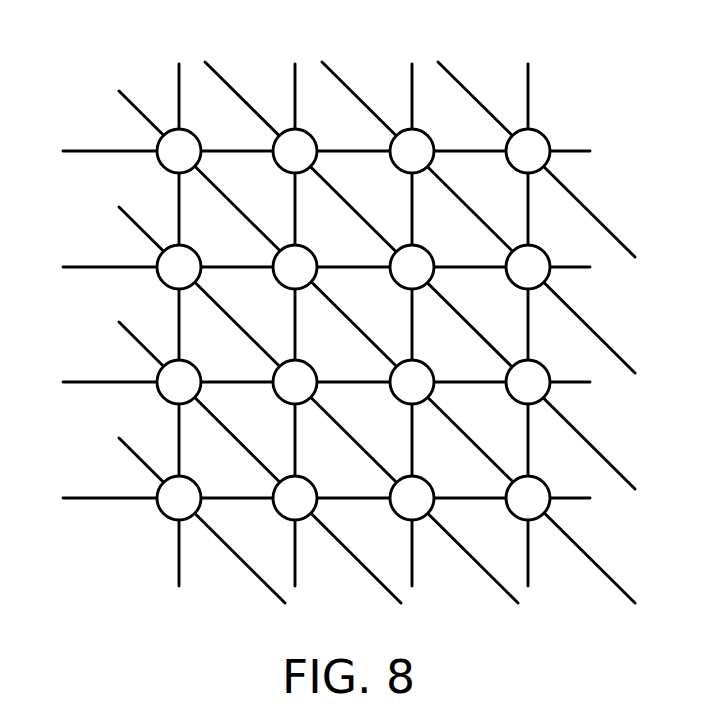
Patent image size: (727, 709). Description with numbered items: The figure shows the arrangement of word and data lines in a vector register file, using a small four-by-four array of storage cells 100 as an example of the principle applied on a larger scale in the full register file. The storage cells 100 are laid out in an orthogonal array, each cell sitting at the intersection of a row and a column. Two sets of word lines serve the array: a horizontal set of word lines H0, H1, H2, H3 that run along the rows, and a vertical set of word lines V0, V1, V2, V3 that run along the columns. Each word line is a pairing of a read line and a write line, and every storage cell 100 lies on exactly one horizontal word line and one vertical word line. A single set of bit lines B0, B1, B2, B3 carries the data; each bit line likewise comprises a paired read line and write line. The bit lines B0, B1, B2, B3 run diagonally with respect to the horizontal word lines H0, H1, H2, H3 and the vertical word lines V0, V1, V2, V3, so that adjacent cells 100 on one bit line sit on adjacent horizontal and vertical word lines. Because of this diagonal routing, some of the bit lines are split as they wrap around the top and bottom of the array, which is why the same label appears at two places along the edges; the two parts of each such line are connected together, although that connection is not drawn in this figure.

The storage cell 100 is at (283, 131).
The horizontal word line H0 is at (309, 152).
The horizontal word line H1 is at (309, 268).
The horizontal word line H2 is at (309, 383).
The horizontal word line H3 is at (309, 499).
The vertical word line V0 is at (528, 310).
The vertical word line V1 is at (412, 310).
The vertical word line V2 is at (295, 310).
The vertical word line V3 is at (179, 310).
The bit line B0 is at (395, 345).
The bit line B1 is at (395, 345).
The bit line B2 is at (395, 345).
The bit line B3 is at (395, 359).